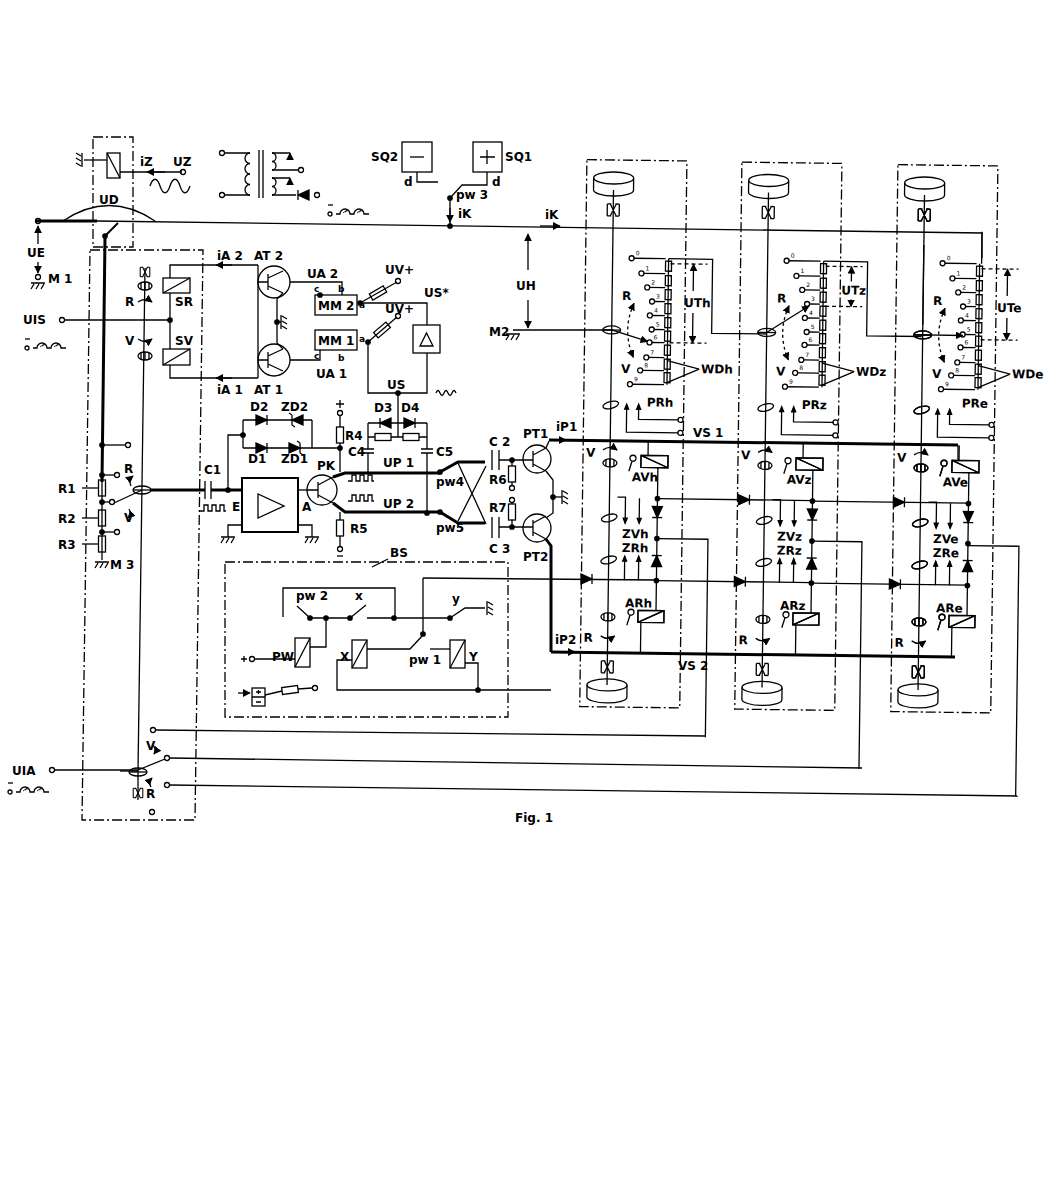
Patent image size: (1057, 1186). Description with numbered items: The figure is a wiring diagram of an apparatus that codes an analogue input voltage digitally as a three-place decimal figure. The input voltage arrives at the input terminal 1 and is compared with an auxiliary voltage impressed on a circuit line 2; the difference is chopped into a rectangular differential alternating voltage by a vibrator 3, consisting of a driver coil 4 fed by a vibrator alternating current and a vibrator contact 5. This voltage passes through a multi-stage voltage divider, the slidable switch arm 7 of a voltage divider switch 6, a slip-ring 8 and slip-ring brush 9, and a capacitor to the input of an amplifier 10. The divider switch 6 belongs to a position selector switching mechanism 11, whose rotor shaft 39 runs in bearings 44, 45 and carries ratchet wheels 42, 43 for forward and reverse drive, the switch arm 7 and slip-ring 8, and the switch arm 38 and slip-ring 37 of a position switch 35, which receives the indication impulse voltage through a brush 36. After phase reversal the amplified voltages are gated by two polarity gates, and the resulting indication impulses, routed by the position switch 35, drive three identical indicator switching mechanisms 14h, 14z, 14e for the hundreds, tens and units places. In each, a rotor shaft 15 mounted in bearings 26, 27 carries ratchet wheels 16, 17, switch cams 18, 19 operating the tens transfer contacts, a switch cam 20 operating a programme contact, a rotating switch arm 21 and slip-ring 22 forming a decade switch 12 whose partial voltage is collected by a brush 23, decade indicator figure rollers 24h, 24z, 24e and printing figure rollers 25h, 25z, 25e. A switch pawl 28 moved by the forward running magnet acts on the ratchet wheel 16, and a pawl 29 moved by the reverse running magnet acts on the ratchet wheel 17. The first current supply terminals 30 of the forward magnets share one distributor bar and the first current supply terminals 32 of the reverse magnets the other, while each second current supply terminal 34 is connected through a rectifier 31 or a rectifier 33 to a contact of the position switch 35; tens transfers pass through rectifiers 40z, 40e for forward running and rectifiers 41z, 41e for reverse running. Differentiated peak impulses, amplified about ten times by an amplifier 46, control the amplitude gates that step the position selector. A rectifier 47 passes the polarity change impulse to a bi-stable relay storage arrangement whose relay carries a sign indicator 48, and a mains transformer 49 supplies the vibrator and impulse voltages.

The input terminal 1 is at (31, 211).
The circuit line 2 is at (178, 220).
The vibrator 3 is at (93, 191).
The driver coil 4 is at (121, 155).
The vibrator contact 5 is at (113, 233).
The voltage divider switch 6 is at (138, 465).
The slidable switch arm 7 is at (133, 498).
The slip-ring 8 is at (145, 486).
The slip-ring brush 9 is at (157, 489).
The amplifier 10 is at (268, 532).
The position selector switching mechanism 11 is at (85, 623).
The decade switch 12 is at (983, 309).
The indicator switching mechanism 14h is at (652, 434).
The indicator switching mechanism 14z is at (807, 436).
The indicator switching mechanism 14e is at (963, 439).
The rotor shaft 15 is at (910, 285).
The ratchet wheel 16 is at (911, 477).
The ratchet wheel 17 is at (909, 612).
The switch cam 18 is at (911, 531).
The switch cam 19 is at (911, 558).
The switch cam 20 is at (913, 400).
The rotating switch arm 21 is at (929, 356).
The slip-ring 22 is at (915, 317).
The brush 23 is at (908, 350).
The decade indicator figure roller 24h is at (625, 166).
The decade indicator figure roller 24z is at (779, 168).
The decade indicator figure roller 24e is at (936, 171).
The printing figure roller 25h is at (597, 704).
The printing figure roller 25z is at (752, 707).
The printing figure roller 25e is at (908, 709).
The bearing 26 is at (954, 210).
The bearing 27 is at (949, 678).
The switch pawl 28 is at (937, 479).
The pawl 29 is at (935, 608).
The first current supply terminal 30 is at (816, 458).
The rectifier 31 is at (822, 512).
The first current supply terminal 32 is at (814, 628).
The rectifier 33 is at (821, 572).
The second current supply terminal 34 is at (815, 541).
The position switch 35 is at (163, 744).
The brush 36 is at (130, 776).
The slip-ring 37 is at (132, 770).
The switch arm 38 is at (135, 766).
The rotor shaft 39 is at (141, 626).
The rectifier 40z is at (734, 495).
The rectifier 40e is at (890, 497).
The rectifier 41z is at (733, 590).
The rectifier 41e is at (889, 592).
The ratchet wheel 42 is at (138, 358).
The ratchet wheel 43 is at (137, 286).
The bearing 44 is at (150, 271).
The bearing 45 is at (134, 795).
The amplifier 46 is at (440, 341).
The rectifier 47 is at (584, 585).
The indicator 48 is at (255, 706).
The mains transformer 49 is at (291, 174).